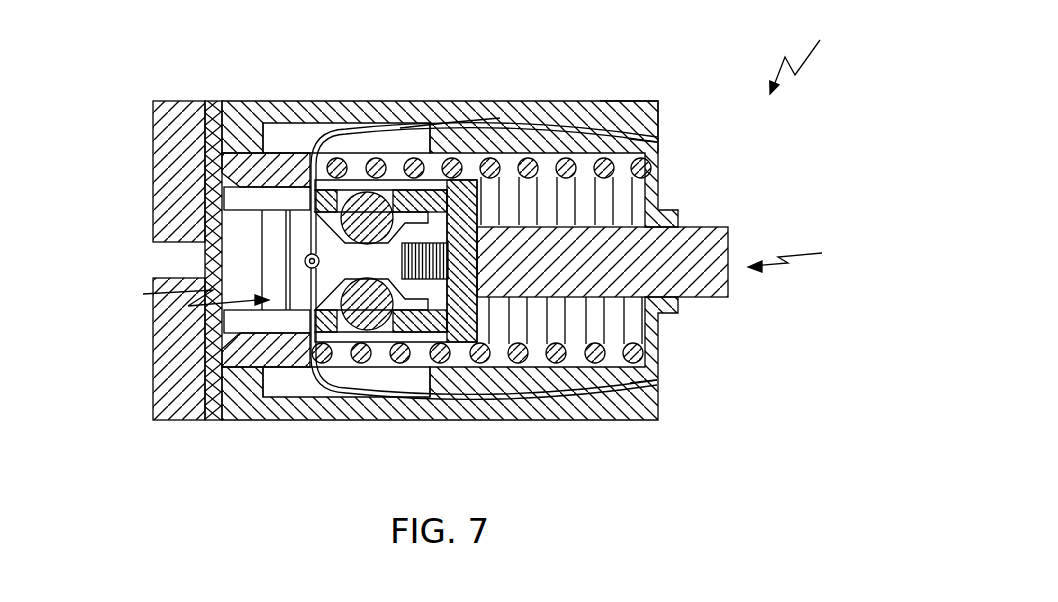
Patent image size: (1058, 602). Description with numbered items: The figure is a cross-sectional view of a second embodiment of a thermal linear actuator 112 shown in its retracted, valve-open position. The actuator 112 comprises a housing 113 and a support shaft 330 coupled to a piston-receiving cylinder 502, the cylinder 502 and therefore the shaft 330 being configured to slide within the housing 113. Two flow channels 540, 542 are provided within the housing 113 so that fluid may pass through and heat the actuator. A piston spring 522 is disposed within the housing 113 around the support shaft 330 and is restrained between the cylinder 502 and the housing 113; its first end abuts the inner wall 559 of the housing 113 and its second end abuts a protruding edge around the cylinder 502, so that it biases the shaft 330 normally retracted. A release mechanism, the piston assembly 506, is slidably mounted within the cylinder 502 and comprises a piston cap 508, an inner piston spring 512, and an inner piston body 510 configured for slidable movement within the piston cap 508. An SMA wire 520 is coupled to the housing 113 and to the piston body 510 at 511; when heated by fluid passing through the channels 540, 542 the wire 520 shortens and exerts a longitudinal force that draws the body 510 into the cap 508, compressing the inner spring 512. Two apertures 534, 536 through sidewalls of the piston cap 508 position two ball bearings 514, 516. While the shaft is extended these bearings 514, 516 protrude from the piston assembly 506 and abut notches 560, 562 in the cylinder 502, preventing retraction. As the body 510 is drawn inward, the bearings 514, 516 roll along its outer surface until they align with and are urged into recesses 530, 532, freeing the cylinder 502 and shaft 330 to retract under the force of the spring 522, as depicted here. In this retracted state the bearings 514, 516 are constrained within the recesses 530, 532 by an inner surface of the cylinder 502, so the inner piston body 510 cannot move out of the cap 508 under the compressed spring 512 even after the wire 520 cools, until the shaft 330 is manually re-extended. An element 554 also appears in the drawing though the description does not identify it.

The thermal linear actuator 112 is at (812, 53).
The housing 113 is at (628, 100).
The support shaft 330 is at (675, 262).
The piston-receiving cylinder 502 is at (247, 372).
The piston assembly 506 is at (177, 299).
The piston cap 508 is at (456, 340).
The inner piston body 510 is at (268, 226).
The coupling point of SMA wire to piston body 511 is at (304, 262).
The inner piston resilient member 512 is at (450, 258).
The ball bearing 514 is at (372, 215).
The ball bearing 516 is at (372, 310).
The SMA wire 520 is at (531, 118).
The piston resilient member 522 is at (642, 352).
The ball bearing slot 530 is at (336, 212).
The ball bearing slot 532 is at (336, 332).
The aperture 534 is at (395, 200).
The aperture 536 is at (395, 332).
The flow channel 540 is at (277, 135).
The flow channel 542 is at (283, 387).
The wire 554 is at (457, 132).
The inner wall of housing 559 is at (645, 170).
The notch 560 is at (232, 182).
The notch 562 is at (232, 340).